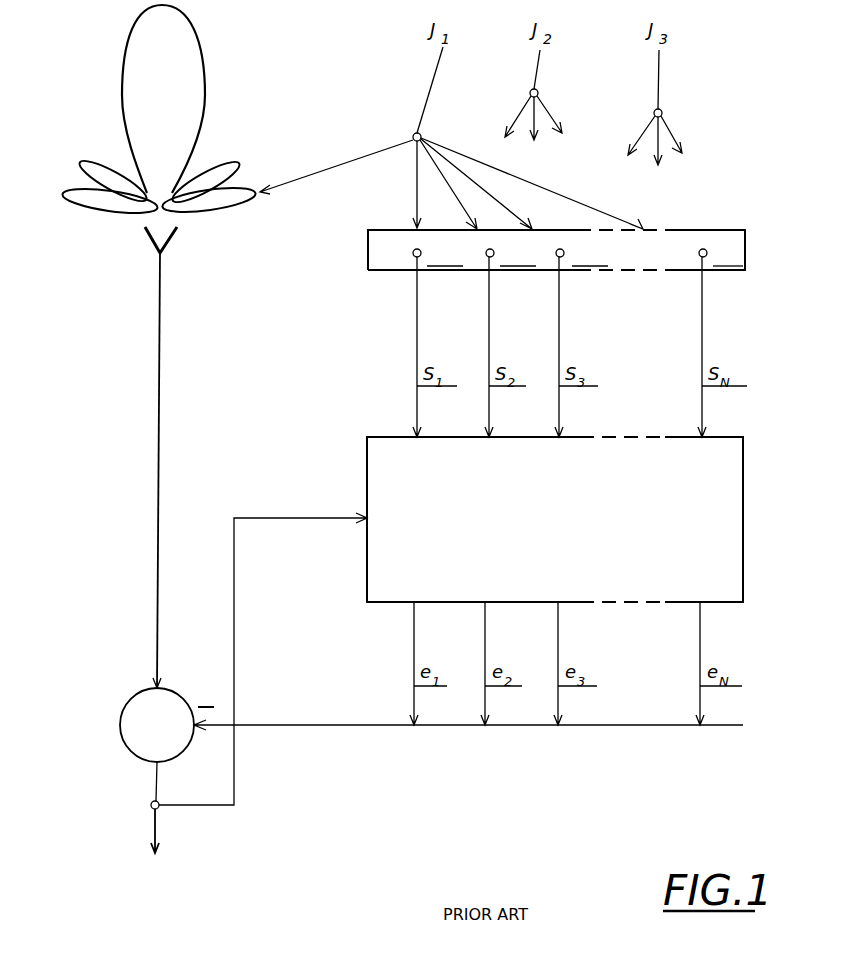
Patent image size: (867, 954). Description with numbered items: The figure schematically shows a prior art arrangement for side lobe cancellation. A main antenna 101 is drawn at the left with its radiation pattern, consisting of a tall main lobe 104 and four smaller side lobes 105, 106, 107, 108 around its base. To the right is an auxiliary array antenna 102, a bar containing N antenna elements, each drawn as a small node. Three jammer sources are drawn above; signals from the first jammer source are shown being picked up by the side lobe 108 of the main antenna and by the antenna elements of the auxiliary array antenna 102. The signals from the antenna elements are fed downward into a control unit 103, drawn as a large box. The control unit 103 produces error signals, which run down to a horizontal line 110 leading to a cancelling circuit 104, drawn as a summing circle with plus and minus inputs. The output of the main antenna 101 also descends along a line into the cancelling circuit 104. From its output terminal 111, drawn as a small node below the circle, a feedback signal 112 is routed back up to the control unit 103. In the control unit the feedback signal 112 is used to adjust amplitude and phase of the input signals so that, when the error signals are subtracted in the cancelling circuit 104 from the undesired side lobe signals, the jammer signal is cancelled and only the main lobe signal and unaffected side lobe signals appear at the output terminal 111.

The main antenna 101 is at (145, 240).
The auxiliary array antenna 102 is at (747, 251).
The control unit 103 is at (742, 525).
The cancelling circuit 104 is at (193, 38).
The side lobe 105 is at (110, 207).
The side lobe 106 is at (110, 180).
The side lobe 107 is at (217, 172).
The side lobe 108 is at (215, 207).
The main antenna signal line 110 is at (160, 363).
The output terminal 111 is at (160, 807).
The feedback signal 112 is at (234, 632).